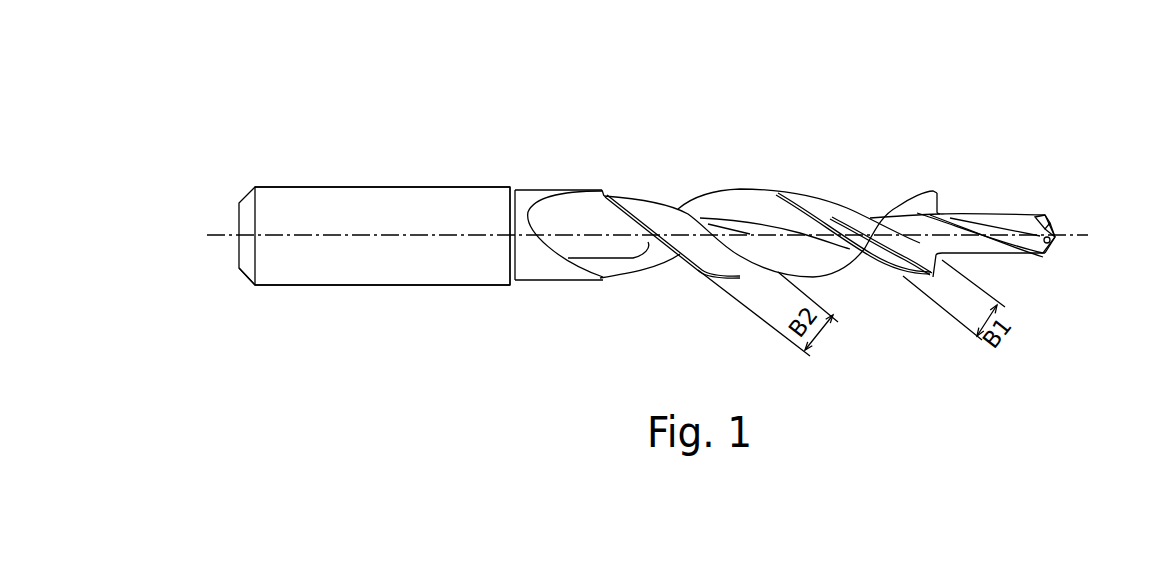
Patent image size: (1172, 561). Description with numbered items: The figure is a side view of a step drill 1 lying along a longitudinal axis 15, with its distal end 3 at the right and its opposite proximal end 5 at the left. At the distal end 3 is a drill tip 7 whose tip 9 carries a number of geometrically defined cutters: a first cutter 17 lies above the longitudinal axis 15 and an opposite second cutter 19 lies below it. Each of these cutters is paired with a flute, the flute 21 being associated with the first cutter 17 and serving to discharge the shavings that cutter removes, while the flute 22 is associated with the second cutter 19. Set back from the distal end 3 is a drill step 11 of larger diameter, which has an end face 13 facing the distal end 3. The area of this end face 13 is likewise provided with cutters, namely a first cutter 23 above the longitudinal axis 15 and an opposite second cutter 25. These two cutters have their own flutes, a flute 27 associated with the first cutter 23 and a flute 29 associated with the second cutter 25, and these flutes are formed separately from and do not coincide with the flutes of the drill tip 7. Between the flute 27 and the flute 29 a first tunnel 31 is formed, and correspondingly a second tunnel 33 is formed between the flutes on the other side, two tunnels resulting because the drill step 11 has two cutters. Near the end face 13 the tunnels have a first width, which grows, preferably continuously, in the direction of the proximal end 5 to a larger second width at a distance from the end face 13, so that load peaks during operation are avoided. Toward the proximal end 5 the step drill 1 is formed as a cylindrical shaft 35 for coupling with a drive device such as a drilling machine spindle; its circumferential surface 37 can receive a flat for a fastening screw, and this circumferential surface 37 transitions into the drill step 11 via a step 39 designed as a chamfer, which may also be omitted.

The step drill 1 is at (218, 127).
The distal end 3 is at (1062, 205).
The proximal end 5 is at (249, 279).
The drill tip 7 is at (993, 210).
The tip 9 is at (1057, 237).
The drill step 11 is at (743, 184).
The end face 13 is at (993, 256).
The longitudinal axis 15 is at (232, 233).
The first cutter 17 is at (1050, 212).
The second cutter 19 is at (1060, 248).
The flute 21 is at (1040, 217).
The flute 22 is at (1050, 254).
The first cutter 23 is at (937, 193).
The second cutter 25 is at (935, 278).
The flute 27 is at (917, 207).
The flute 29 is at (777, 210).
The first tunnel 31 is at (823, 207).
The second tunnel 33 is at (637, 200).
The cylindrical shaft 35 is at (357, 184).
The circumferential surface 37 is at (405, 184).
The step 39 is at (517, 188).